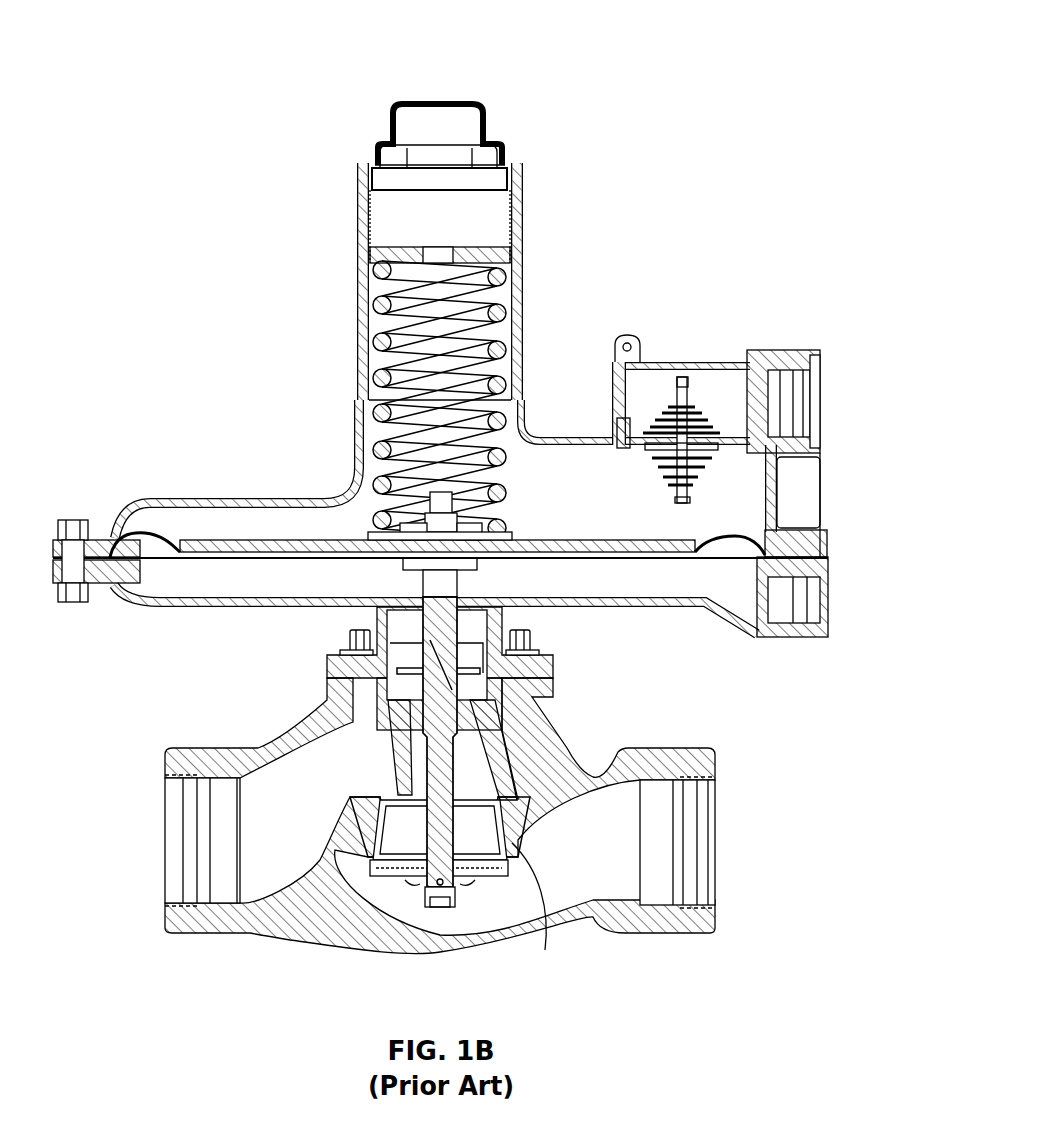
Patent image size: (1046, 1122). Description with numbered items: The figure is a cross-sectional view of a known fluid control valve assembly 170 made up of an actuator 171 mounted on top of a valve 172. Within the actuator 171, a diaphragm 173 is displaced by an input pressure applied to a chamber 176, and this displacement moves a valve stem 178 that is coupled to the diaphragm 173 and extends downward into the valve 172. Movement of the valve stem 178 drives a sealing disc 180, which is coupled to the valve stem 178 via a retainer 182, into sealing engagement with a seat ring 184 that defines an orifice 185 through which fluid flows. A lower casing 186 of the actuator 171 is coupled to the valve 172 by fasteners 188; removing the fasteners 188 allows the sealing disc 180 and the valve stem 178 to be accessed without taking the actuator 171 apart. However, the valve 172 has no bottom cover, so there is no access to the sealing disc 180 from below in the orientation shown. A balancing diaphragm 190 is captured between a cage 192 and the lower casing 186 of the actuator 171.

The fluid control valve assembly 170 is at (711, 36).
The actuator 171 is at (568, 239).
The valve 172 is at (590, 740).
The diaphragm 173 is at (148, 537).
The chamber 176 is at (621, 587).
The valve stem 178 is at (440, 790).
The sealing disc 180 is at (482, 866).
The retainer 182 is at (418, 885).
The seat ring 184 is at (375, 843).
The orifice 185 is at (512, 843).
The lower casing 186 is at (163, 601).
The fasteners 188 is at (345, 642).
The balancing diaphragm 190 is at (545, 655).
The cage 192 is at (540, 713).